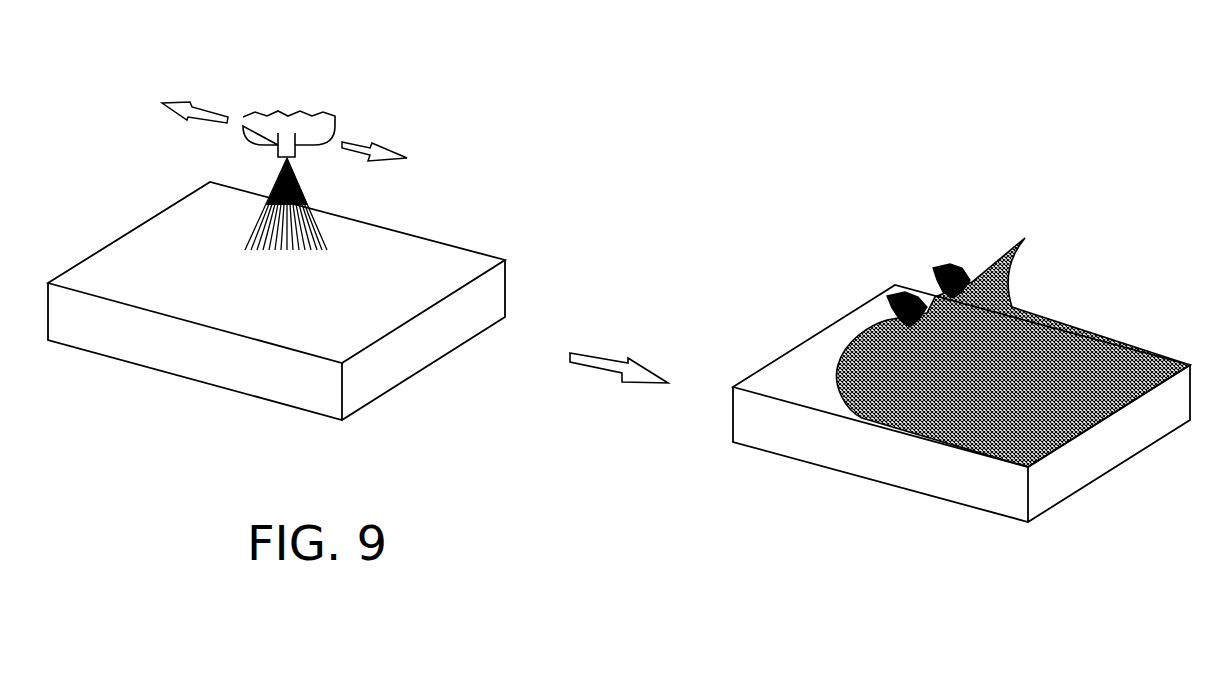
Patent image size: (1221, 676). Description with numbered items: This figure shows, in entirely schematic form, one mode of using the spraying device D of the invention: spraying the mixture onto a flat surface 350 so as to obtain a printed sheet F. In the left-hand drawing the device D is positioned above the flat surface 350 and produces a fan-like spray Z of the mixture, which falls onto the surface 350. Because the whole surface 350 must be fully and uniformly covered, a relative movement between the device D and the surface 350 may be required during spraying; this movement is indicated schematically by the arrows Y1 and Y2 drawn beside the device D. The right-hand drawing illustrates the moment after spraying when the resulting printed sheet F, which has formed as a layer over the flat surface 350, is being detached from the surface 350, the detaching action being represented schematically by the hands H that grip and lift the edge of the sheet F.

The flat surface 350 is at (412, 258).
The device D is at (318, 128).
The fan-like spray Z is at (287, 212).
The arrow Y1 is at (198, 112).
The arrow Y2 is at (370, 148).
The printed sheet F is at (1003, 282).
The hands H is at (942, 272).